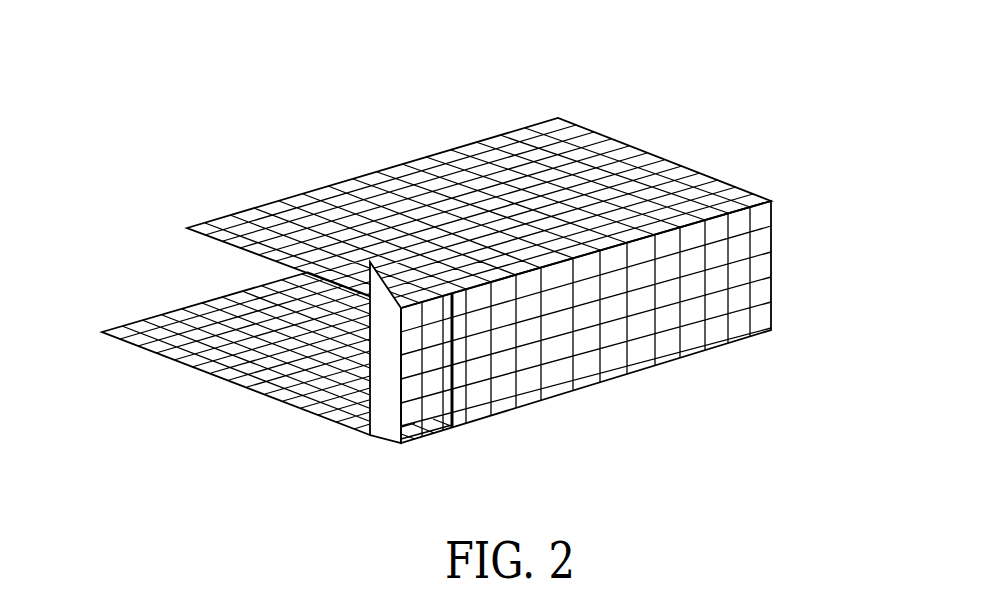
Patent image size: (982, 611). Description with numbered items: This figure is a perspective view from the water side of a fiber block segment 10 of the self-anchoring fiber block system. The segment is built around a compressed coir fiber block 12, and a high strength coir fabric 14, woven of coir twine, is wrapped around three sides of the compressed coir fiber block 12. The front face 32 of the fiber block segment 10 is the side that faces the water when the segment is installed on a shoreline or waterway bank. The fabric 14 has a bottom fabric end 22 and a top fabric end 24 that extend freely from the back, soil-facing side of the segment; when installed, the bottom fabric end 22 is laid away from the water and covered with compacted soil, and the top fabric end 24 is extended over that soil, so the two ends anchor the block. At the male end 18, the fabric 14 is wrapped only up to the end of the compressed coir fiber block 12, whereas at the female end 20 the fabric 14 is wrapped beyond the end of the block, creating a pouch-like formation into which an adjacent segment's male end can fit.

The fiber block segment 10 is at (505, 352).
The compressed coir fiber block 12 is at (256, 385).
The high strength coir fabric 14 is at (288, 326).
The male end 18 is at (650, 318).
The female end 20 is at (387, 382).
The bottom fabric end 22 is at (122, 325).
The top fabric end 24 is at (481, 140).
The front face 32 is at (610, 395).